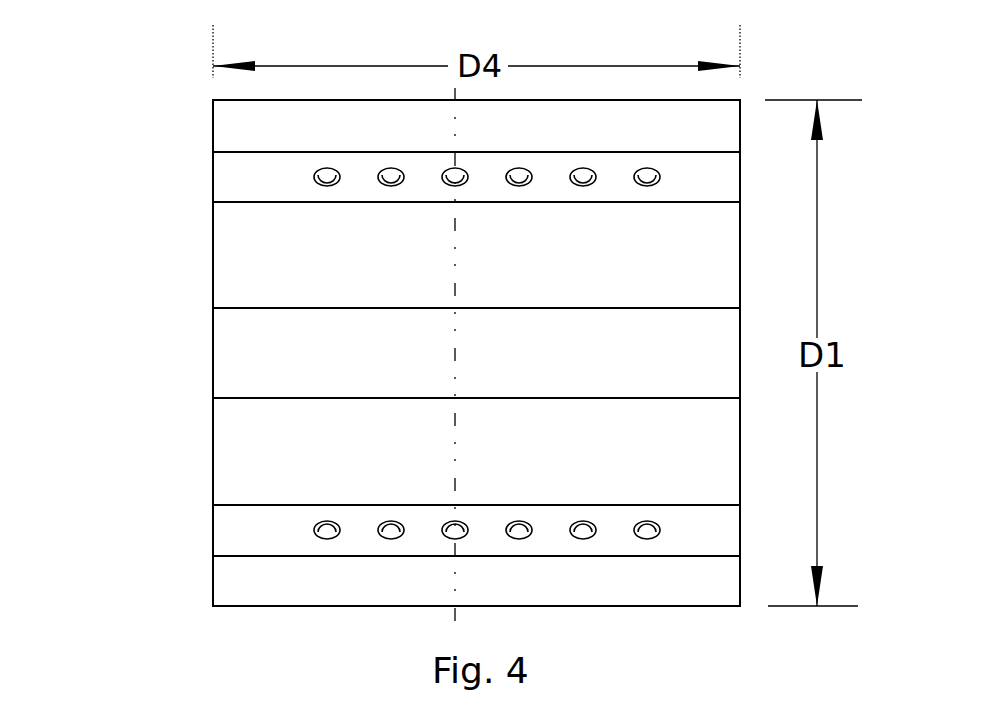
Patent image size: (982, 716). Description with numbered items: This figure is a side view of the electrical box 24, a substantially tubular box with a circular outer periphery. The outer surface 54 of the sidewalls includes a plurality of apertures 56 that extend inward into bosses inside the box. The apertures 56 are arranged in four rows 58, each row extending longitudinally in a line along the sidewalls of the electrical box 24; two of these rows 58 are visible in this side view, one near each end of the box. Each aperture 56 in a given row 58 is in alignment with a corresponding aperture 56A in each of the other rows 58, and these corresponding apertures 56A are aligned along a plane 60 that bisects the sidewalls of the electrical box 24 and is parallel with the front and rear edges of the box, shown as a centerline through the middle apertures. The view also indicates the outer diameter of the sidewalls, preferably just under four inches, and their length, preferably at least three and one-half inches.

The electrical box 24 is at (150, 92).
The outer surface 54 is at (402, 370).
The apertures 56 is at (327, 181).
The corresponding apertures 56A is at (455, 181).
The rows 58 is at (288, 176).
The plane 60 is at (456, 345).